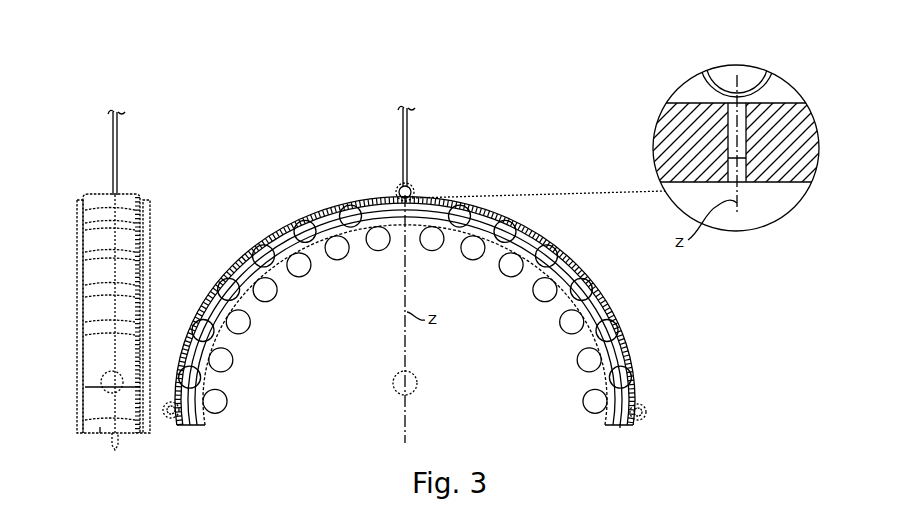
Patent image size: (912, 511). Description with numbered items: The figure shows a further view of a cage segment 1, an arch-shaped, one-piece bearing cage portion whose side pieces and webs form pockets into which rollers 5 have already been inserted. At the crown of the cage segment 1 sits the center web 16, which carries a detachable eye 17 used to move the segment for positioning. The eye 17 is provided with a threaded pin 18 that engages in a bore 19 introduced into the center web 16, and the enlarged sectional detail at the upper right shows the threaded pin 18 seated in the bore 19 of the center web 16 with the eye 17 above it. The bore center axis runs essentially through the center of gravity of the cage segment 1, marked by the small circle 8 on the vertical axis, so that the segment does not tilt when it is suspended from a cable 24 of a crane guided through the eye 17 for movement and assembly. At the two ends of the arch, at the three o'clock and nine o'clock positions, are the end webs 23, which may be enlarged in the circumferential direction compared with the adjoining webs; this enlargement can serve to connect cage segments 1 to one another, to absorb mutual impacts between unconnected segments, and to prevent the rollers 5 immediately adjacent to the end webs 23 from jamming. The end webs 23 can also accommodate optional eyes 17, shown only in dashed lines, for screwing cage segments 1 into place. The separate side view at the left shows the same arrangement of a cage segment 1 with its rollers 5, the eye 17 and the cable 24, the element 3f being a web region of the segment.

The cage segment 1 is at (158, 222).
The plug / threaded insert 3f is at (87, 332).
The rollers 5 is at (93, 405).
The ball / center point 8 is at (263, 383).
The center web 16 is at (660, 127).
The eye 17 is at (412, 186).
The threaded pin 18 is at (755, 118).
The bore 19 is at (760, 168).
The end webs 23 is at (100, 428).
The cable 24 is at (403, 138).